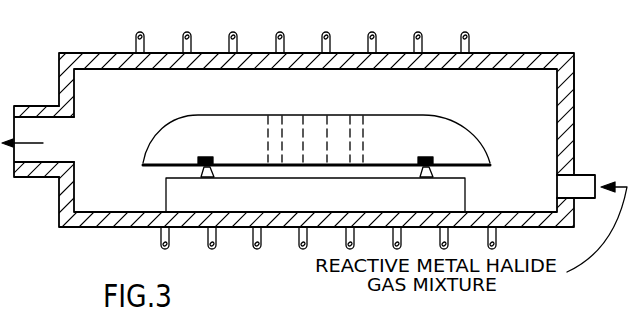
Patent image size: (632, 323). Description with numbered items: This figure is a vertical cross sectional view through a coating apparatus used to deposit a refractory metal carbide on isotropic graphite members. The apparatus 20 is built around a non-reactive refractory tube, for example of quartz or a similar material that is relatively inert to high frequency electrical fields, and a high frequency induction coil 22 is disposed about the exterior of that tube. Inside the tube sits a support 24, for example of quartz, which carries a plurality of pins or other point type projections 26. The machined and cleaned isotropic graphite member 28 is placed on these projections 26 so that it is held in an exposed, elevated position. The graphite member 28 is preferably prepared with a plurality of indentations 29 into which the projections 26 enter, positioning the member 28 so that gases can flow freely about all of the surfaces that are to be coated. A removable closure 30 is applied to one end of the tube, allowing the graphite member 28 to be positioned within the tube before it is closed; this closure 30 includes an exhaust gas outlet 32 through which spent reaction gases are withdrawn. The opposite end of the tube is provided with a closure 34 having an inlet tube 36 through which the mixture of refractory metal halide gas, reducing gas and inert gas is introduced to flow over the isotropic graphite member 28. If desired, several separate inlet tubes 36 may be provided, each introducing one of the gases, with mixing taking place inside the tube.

The apparatus 20 is at (242, 275).
The high frequency induction coil 22 is at (237, 33).
The support 24 is at (457, 196).
The pins or point type projections 26 is at (200, 167).
The isotropic graphite member 28 is at (383, 122).
The indentations 29 is at (226, 148).
The removable closure 30 is at (59, 74).
The exhaust gas outlet 32 is at (40, 107).
The closure 34 is at (568, 120).
The inlet tube 36 is at (592, 165).